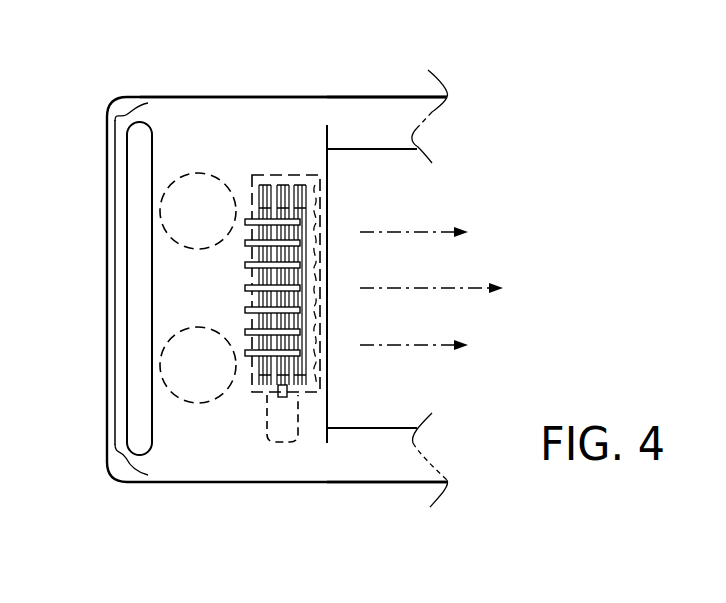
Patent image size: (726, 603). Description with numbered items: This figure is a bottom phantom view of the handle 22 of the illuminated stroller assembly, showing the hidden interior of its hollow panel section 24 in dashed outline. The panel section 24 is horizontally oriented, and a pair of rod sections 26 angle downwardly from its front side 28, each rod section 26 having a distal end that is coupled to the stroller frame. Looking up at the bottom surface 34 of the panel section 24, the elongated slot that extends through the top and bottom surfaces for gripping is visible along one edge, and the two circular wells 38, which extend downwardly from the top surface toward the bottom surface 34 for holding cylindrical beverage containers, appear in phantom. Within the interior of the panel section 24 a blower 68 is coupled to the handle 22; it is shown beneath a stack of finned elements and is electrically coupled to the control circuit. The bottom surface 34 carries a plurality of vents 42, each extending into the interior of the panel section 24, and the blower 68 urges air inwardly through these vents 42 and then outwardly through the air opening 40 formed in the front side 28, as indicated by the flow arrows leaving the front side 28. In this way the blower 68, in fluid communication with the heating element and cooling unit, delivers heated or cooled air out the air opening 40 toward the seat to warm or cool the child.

The handle 22 is at (118, 97).
The panel section 24 is at (197, 88).
The rod sections 26 is at (372, 87).
The front side 28 is at (327, 185).
The bottom surface 34 is at (283, 120).
The wells 38 is at (177, 243).
The air opening 40 is at (342, 357).
The vents 42 is at (240, 300).
The blower 68 is at (300, 383).